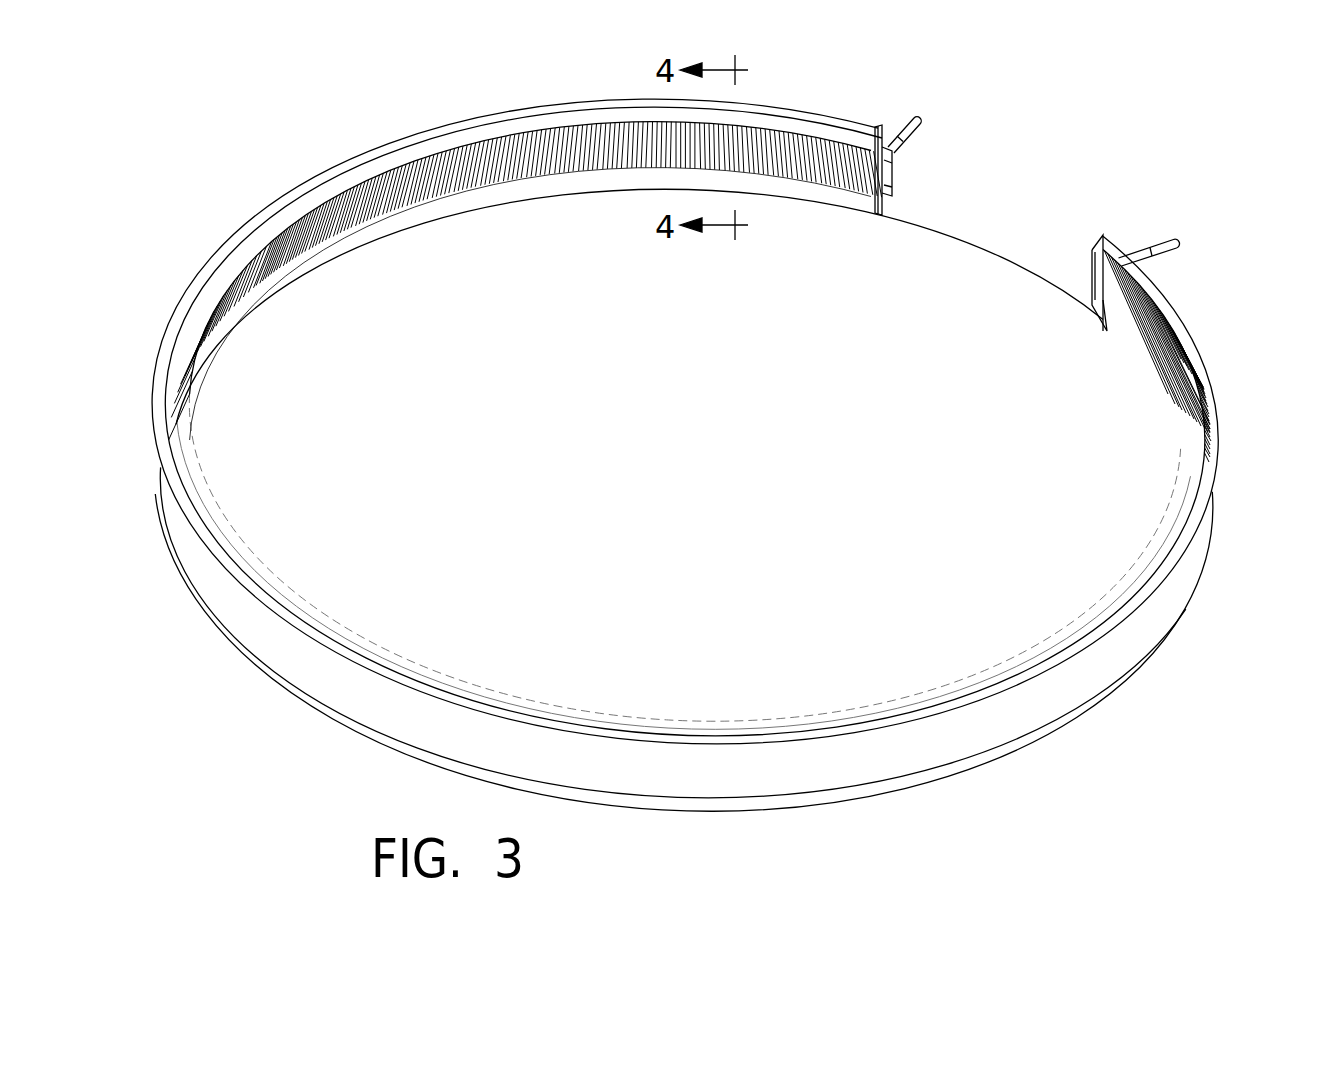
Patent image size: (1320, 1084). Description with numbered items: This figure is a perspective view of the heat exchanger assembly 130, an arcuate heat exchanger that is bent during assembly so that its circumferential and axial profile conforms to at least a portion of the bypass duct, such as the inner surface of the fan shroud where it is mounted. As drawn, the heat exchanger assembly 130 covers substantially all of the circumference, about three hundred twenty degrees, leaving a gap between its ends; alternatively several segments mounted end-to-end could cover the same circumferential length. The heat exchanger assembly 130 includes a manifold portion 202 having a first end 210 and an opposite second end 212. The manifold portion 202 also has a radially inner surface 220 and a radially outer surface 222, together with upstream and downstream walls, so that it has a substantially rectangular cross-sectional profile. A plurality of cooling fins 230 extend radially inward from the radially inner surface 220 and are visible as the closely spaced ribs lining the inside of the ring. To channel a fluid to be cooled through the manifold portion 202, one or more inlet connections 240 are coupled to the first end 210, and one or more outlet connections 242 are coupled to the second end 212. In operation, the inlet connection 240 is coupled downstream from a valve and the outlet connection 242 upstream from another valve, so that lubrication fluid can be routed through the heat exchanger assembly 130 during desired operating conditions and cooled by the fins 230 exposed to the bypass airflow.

The heat exchanger assembly 130 is at (1140, 136).
The manifold portion 202 is at (1090, 299).
The first end 210 is at (896, 176).
The second end 212 is at (1091, 258).
The radially inner surface 220 is at (893, 196).
The radially outer surface 222 is at (1020, 718).
The cooling fins 230 is at (521, 160).
The inlet connection 240 is at (919, 124).
The outlet connection 242 is at (1170, 254).